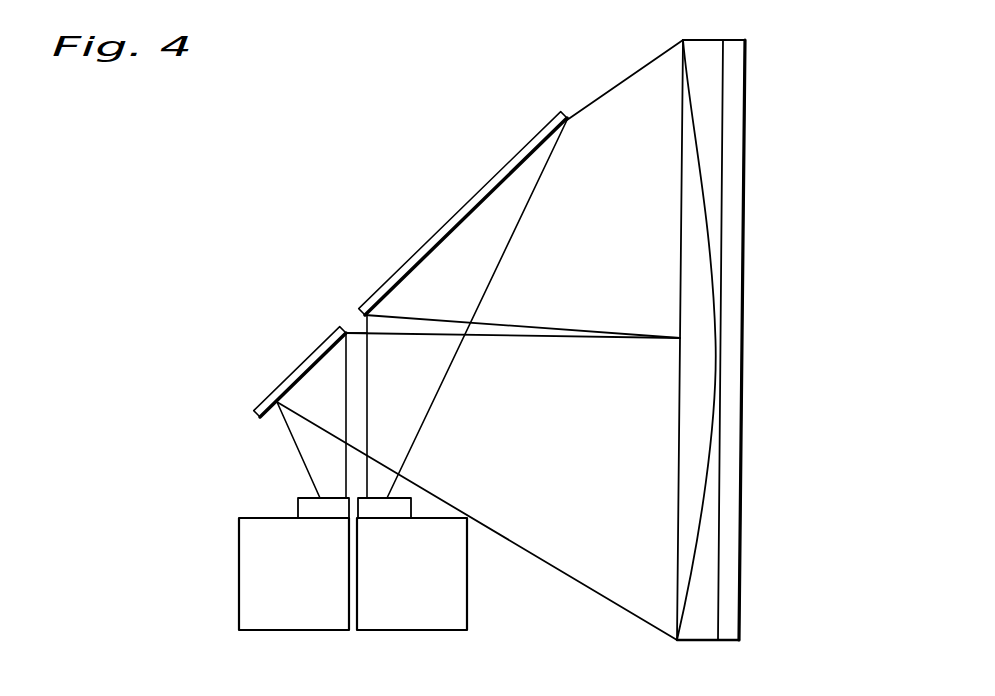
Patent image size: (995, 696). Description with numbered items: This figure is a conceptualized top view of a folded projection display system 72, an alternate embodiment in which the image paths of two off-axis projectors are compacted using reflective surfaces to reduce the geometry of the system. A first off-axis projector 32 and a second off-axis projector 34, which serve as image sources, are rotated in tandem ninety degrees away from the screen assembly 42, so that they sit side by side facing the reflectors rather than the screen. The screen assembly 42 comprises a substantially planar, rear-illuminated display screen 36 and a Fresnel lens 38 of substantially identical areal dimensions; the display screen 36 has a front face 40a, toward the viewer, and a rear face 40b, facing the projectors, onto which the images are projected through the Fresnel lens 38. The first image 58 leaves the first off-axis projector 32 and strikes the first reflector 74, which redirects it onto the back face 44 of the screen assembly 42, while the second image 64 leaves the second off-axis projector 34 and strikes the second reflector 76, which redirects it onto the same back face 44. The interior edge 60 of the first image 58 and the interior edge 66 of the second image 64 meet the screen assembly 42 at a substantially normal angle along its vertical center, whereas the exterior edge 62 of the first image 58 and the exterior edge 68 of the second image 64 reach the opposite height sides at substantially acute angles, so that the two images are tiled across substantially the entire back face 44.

The first off-axis projector 32 is at (277, 590).
The second off-axis projector 34 is at (396, 590).
The display screen 36 is at (721, 341).
The Fresnel lens 38 is at (707, 133).
The front face 40a is at (740, 612).
The rear face 40b is at (717, 615).
The screen assembly 42 is at (705, 40).
The rear face of the screen assembly 44 is at (687, 100).
The first image 58 is at (553, 418).
The interior edge of the first image 60 is at (497, 340).
The exterior edge of the first image 62 is at (567, 575).
The second image 64 is at (553, 238).
The interior edge of the second image 66 is at (513, 322).
The exterior edge of the second image 68 is at (608, 88).
The folded projection display system 72 is at (342, 174).
The first reflector 74 is at (298, 363).
The second reflector 76 is at (440, 225).